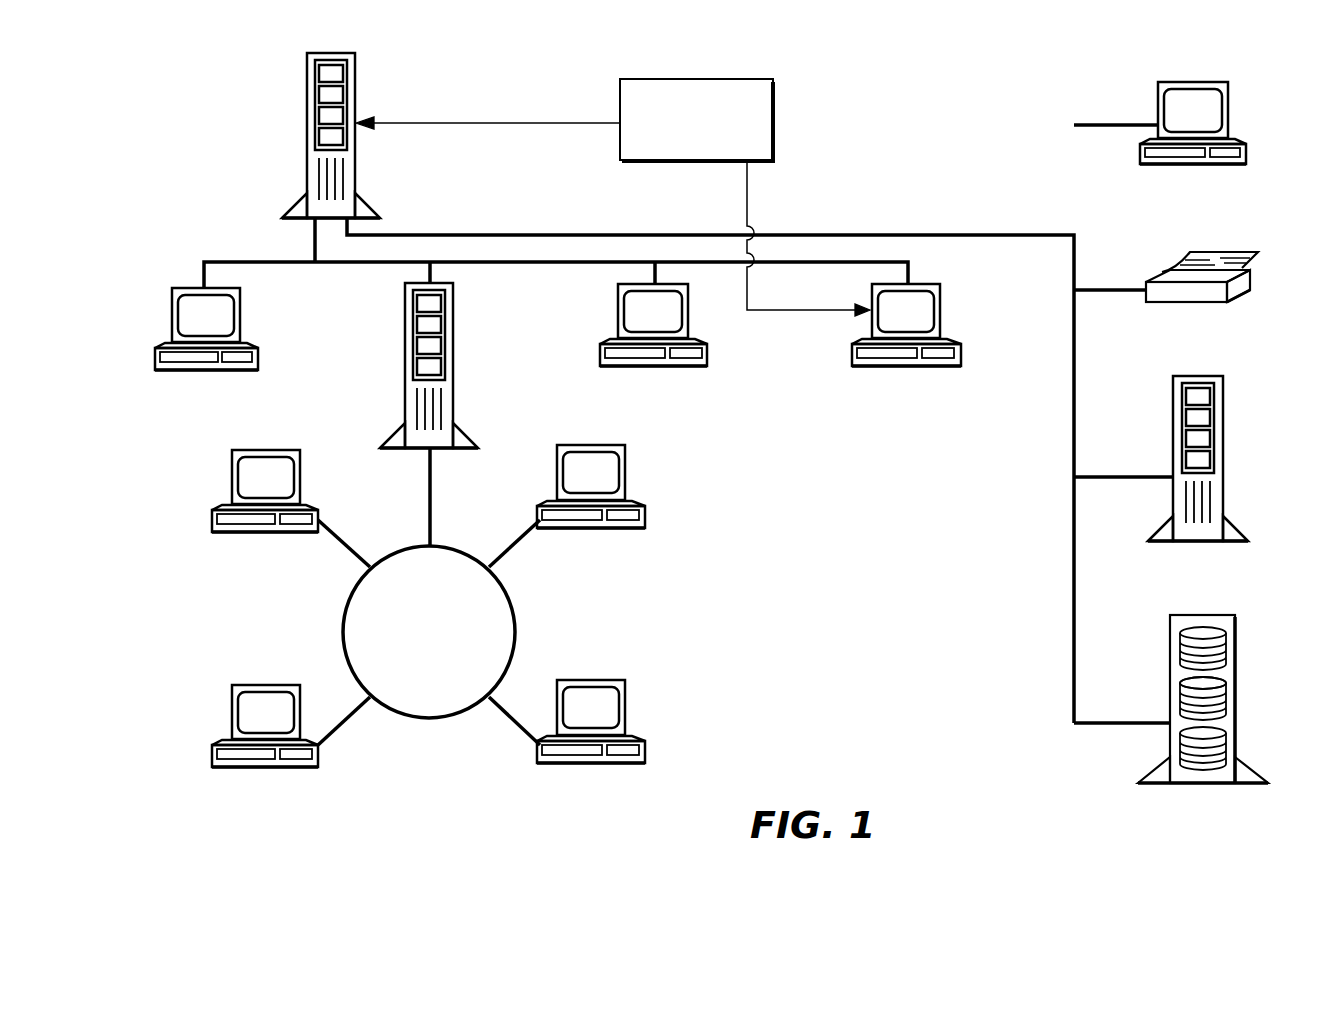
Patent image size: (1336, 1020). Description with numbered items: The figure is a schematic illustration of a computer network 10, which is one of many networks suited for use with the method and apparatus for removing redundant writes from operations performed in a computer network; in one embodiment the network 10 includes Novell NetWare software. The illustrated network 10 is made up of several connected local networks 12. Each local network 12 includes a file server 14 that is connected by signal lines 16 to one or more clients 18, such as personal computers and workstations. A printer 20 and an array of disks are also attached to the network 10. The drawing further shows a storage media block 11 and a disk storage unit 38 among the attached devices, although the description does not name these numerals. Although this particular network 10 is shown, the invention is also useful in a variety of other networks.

The computer network 10 is at (232, 142).
The storage media 11 is at (774, 131).
The local network 12 is at (1074, 440).
The file server 14 is at (356, 102).
The signal line 16 is at (281, 264).
The client 18 is at (690, 326).
The printer 20 is at (1245, 282).
The disk storage 38 is at (1236, 721).